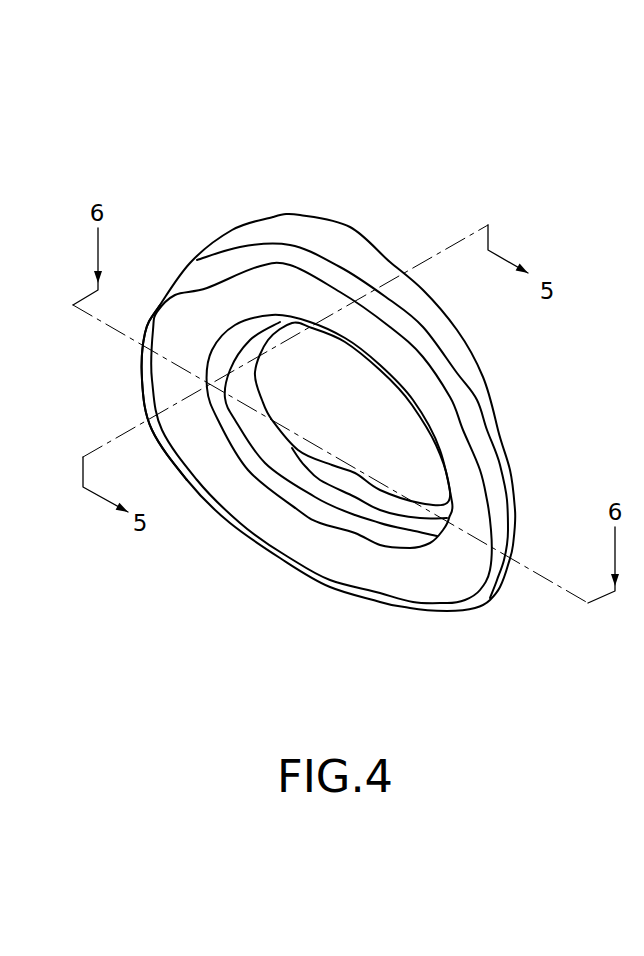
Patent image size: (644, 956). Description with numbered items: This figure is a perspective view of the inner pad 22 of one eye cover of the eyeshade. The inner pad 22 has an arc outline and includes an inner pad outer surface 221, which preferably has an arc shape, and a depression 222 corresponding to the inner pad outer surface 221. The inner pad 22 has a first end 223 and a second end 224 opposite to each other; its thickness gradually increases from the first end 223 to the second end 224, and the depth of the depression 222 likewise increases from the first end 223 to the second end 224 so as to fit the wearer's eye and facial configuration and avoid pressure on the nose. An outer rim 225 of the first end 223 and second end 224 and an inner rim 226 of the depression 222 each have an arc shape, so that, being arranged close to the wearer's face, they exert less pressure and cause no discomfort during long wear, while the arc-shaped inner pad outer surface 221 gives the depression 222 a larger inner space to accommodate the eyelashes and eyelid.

The inner pad 22 is at (266, 100).
The inner pad outer surface 221 is at (300, 214).
The depression 222 is at (370, 433).
The first end 223 is at (507, 587).
The second end 224 is at (140, 364).
The outer rim 225 is at (317, 270).
The inner rim 226 is at (368, 527).